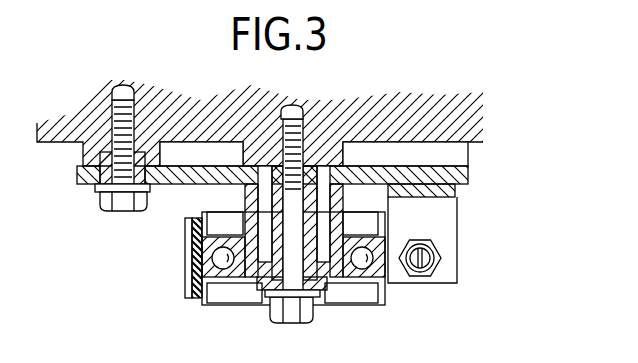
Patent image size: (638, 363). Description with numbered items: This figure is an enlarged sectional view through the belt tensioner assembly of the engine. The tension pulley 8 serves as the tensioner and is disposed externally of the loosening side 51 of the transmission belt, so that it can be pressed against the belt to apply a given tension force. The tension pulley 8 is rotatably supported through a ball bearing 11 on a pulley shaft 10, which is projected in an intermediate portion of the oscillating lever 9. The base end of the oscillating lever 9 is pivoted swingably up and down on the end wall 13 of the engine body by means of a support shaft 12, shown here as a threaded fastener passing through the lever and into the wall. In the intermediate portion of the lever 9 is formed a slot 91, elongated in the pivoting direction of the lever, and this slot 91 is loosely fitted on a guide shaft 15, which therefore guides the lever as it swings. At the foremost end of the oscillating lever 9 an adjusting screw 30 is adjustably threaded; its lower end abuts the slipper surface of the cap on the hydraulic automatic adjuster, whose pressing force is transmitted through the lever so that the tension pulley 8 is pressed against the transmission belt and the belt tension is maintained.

The tension pulley 8 is at (385, 298).
The oscillating lever 9 is at (170, 180).
The pulley shaft 10 is at (244, 194).
The ball bearing 11 is at (192, 249).
The support shaft 12 is at (120, 211).
The end wall 13 is at (402, 141).
The guide shaft 15 is at (292, 292).
The adjusting screw 30 is at (441, 258).
The loosening side 51 is at (195, 278).
The slot 91 is at (268, 290).